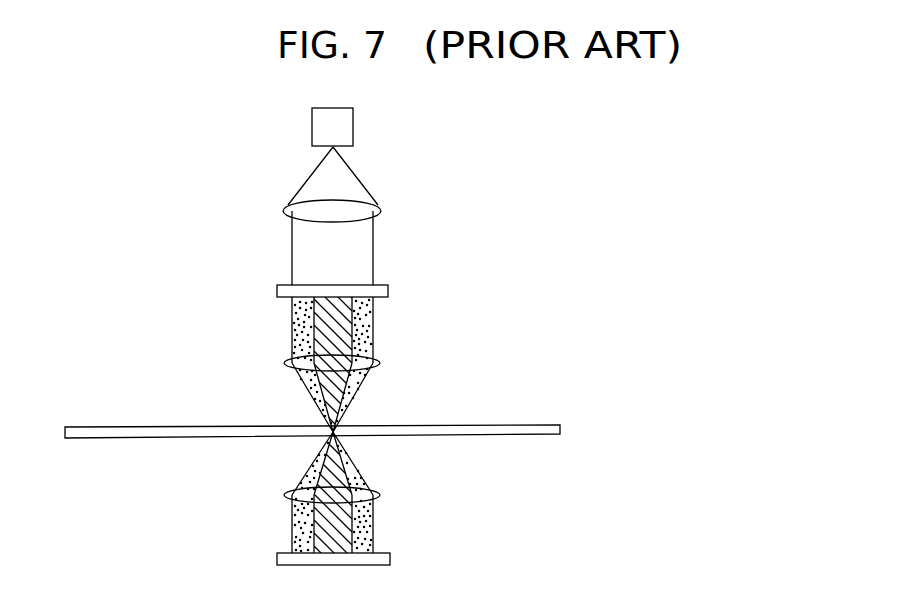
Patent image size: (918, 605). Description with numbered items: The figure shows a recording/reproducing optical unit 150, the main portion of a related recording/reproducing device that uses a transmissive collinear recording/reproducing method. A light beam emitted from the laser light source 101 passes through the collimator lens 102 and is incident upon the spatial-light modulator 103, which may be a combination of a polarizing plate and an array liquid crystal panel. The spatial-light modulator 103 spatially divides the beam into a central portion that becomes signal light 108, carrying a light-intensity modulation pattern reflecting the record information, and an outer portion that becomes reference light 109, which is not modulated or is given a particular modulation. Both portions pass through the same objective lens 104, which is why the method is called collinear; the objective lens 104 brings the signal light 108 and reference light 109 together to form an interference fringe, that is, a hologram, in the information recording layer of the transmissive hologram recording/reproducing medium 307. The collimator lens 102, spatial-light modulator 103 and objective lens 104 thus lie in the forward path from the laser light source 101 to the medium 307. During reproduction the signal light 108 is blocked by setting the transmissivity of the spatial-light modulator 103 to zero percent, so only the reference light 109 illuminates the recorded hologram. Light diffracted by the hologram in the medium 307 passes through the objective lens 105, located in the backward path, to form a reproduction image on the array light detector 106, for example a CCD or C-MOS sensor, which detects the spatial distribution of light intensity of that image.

The laser light source 101 is at (347, 128).
The collimator lens 102 is at (381, 213).
The spatial-light modulator 103 is at (388, 291).
The objective lens 104 is at (380, 366).
The objective lens 105 is at (380, 496).
The array light detector 106 is at (385, 558).
The signal light 108 is at (325, 322).
The reference light 109 is at (305, 343).
The recording/reproducing optical unit 150 is at (516, 224).
The hologram recording/reproducing medium 307 is at (512, 424).